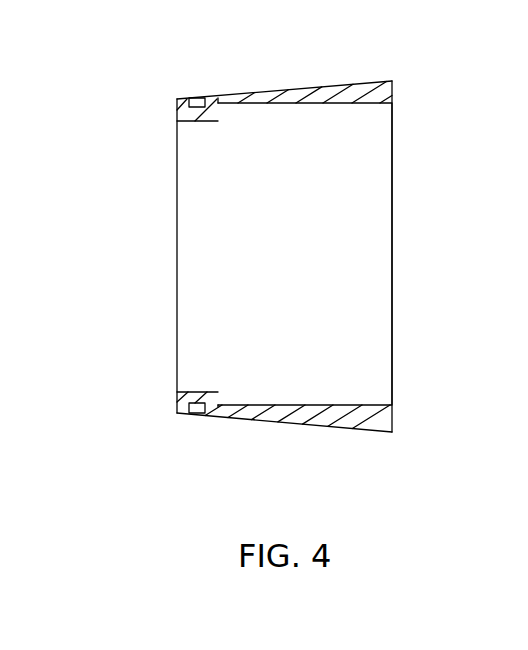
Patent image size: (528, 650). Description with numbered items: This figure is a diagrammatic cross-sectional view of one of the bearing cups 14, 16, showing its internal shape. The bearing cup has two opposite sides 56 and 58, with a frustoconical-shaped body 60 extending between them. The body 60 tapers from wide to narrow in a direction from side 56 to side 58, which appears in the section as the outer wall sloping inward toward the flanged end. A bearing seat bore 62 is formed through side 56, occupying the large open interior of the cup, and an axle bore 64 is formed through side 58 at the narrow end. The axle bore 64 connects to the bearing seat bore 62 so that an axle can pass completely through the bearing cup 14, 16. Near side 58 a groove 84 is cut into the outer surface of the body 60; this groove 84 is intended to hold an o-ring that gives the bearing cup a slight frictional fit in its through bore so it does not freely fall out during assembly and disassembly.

The bearing cup 14 is at (279, 450).
The bearing cup 16 is at (230, 417).
The side 56 is at (393, 93).
The side 58 is at (177, 114).
The frustoconical-shaped body 60 is at (268, 91).
The bearing seat bore 62 is at (348, 300).
The axle bore 64 is at (205, 255).
The groove 84 is at (197, 99).